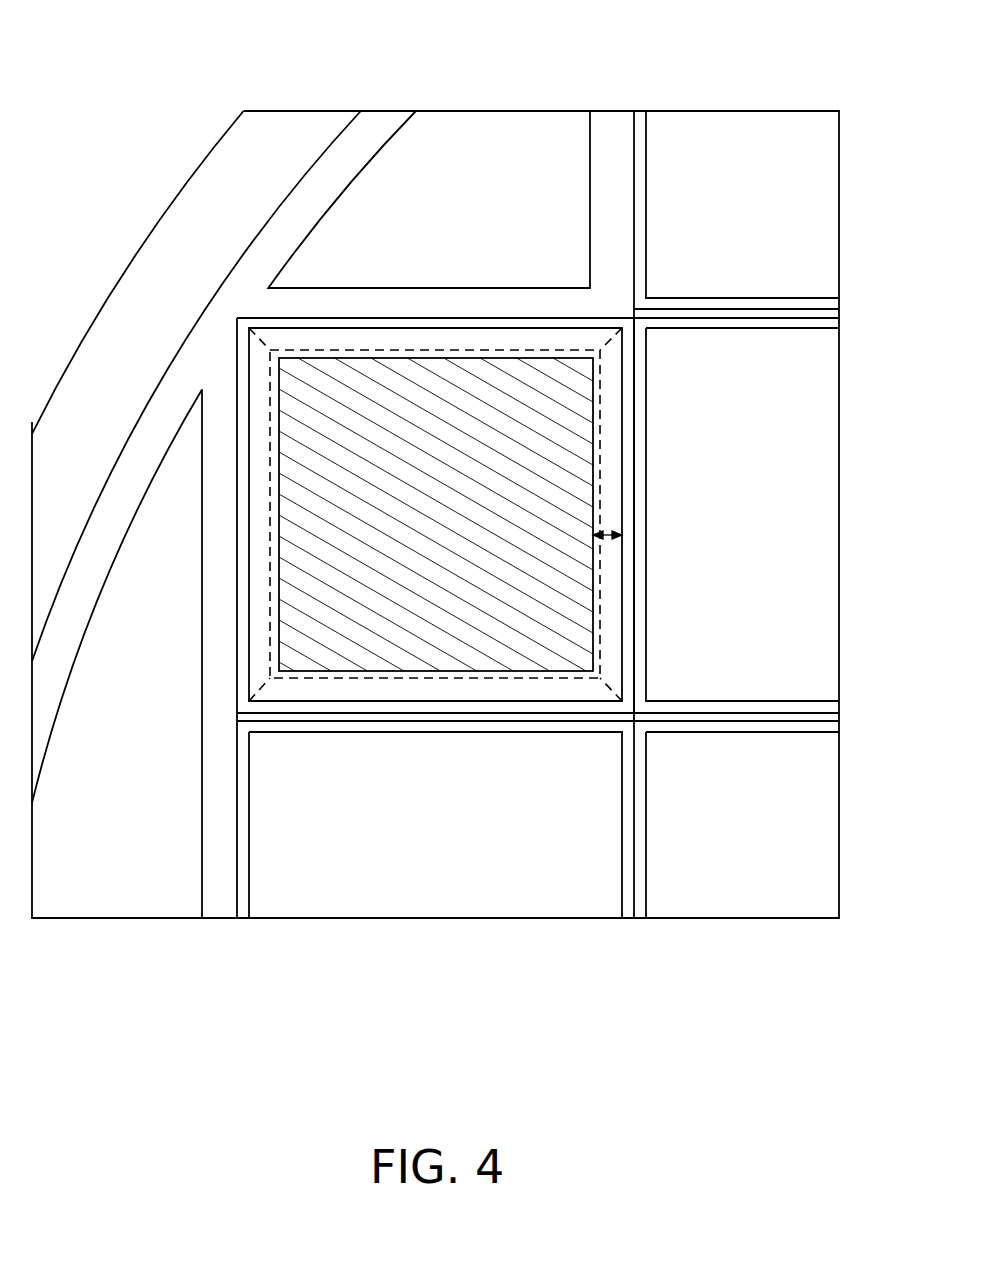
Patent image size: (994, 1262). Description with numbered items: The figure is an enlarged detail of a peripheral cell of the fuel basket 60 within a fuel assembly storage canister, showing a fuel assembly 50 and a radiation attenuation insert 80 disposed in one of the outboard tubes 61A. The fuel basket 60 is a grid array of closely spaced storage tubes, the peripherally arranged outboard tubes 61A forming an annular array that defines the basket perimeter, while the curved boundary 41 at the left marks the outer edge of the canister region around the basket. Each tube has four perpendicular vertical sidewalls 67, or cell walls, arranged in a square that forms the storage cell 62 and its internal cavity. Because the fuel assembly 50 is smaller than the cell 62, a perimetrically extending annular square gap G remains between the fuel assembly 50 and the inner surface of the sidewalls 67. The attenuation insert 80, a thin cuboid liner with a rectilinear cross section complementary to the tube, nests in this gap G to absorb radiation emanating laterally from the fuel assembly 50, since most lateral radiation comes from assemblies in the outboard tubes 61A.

The wafer edge region 41 is at (178, 197).
The fuel basket 60 is at (673, 197).
The storage cell 62 is at (410, 330).
The tube sidewall 67 is at (635, 407).
The gap G is at (606, 533).
The fuel assembly 50 is at (450, 511).
The outboard tube 61A is at (237, 563).
The attenuation insert 80 is at (270, 615).